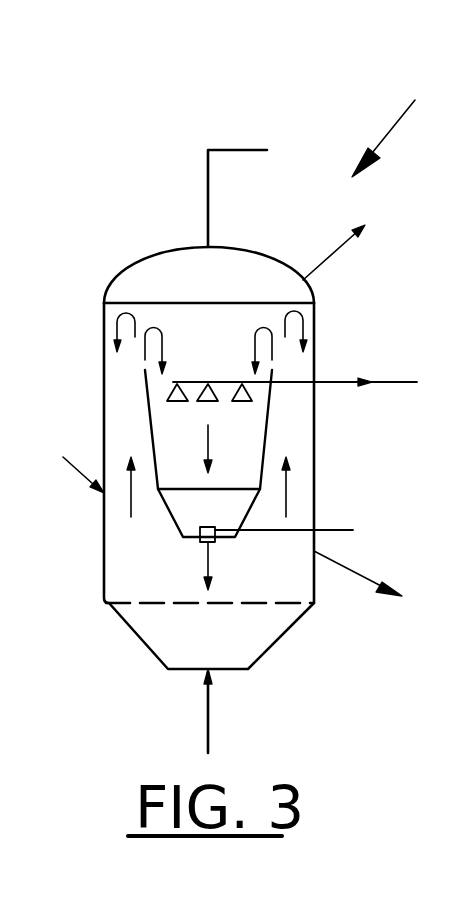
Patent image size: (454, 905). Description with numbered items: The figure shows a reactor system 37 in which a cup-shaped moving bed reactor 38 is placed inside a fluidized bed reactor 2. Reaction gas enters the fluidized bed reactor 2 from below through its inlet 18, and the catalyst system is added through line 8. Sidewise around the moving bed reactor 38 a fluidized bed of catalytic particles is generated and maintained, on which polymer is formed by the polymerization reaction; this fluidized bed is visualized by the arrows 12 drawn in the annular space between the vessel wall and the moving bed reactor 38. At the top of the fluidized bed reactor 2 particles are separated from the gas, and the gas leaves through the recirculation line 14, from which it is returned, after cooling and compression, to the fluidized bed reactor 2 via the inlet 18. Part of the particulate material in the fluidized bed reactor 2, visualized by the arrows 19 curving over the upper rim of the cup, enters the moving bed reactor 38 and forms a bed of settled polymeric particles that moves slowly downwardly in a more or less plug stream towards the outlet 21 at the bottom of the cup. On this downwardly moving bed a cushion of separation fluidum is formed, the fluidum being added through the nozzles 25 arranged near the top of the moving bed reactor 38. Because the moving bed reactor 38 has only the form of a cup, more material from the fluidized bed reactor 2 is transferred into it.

The fluidized bed reactor 2 is at (314, 492).
The line 8 is at (75, 472).
The arrows 12 is at (117, 320).
The recirculation line 14 is at (208, 178).
The inlet 18 is at (208, 719).
The arrows 19 is at (158, 335).
The outlet 21 is at (213, 538).
The nozzles 25 is at (213, 405).
The reactor system 37 is at (375, 175).
The moving bed reactor 38 is at (268, 431).